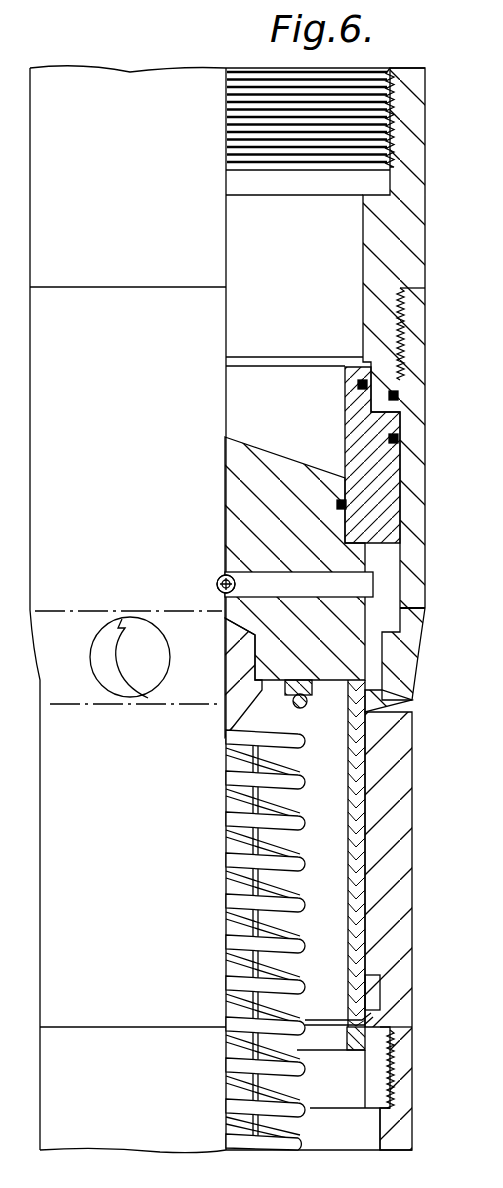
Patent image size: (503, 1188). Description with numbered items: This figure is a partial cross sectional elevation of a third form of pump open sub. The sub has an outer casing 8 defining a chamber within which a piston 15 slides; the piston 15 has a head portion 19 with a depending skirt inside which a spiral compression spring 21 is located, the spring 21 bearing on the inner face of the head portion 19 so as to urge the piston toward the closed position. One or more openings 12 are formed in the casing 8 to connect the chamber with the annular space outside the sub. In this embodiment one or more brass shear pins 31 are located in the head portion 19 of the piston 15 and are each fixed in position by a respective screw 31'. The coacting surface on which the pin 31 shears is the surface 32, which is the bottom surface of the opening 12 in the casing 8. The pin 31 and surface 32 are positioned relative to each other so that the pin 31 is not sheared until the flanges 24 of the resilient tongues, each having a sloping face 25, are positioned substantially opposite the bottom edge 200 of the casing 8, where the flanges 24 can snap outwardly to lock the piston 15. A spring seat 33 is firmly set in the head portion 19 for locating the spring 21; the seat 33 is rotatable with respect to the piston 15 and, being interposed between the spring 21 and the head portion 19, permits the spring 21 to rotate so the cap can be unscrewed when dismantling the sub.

The outer casing 8 is at (398, 822).
The openings 12 is at (424, 640).
The piston 15 is at (311, 462).
The head portion 19 is at (325, 553).
The spiral compression spring 21 is at (298, 782).
The flange 24 is at (372, 996).
The sloping face 25 is at (382, 1023).
The shear pin 31 is at (348, 589).
The screw 31' is at (201, 564).
The surface 32 is at (380, 700).
The spring seat 33 is at (310, 695).
The bottom edge 200 is at (378, 1110).